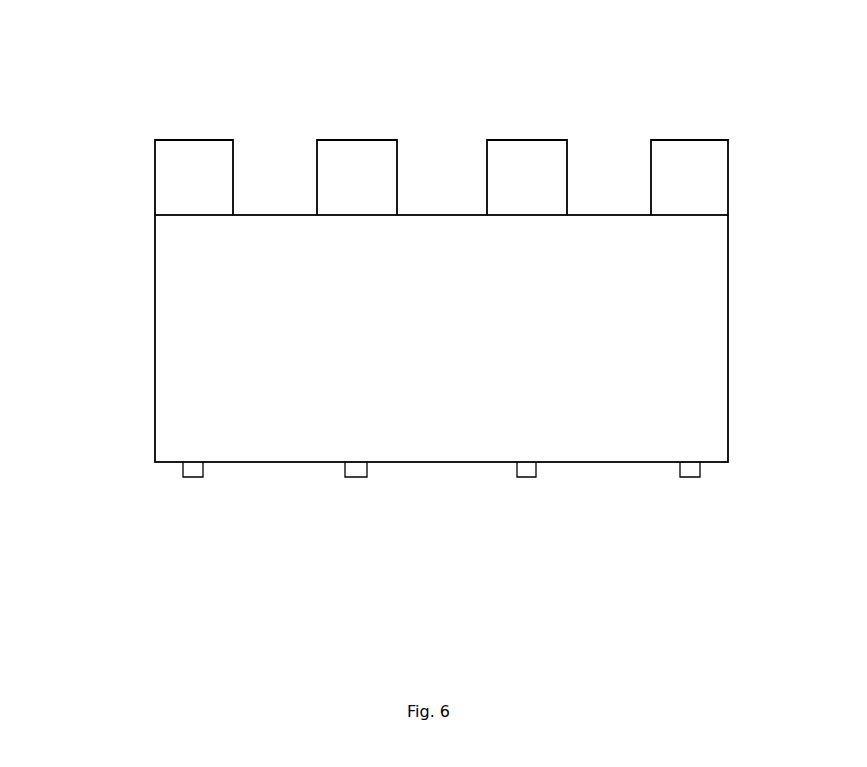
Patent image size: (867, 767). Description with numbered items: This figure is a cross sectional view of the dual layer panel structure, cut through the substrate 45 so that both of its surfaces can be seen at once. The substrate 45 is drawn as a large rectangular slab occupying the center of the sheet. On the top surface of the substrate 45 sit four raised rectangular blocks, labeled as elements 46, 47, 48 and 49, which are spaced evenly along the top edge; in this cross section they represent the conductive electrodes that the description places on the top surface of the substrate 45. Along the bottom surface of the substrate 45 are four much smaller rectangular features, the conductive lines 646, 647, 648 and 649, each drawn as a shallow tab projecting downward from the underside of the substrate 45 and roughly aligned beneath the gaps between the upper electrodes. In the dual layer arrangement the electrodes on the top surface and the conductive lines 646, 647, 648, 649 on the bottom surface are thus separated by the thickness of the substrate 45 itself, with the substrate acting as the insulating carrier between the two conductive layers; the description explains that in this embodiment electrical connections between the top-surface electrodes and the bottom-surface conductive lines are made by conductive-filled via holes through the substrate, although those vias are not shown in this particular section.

The substrate 45 is at (145, 368).
The first upper contact block 46 is at (194, 123).
The second upper contact block 47 is at (360, 115).
The third upper contact block 48 is at (518, 122).
The fourth upper contact block 49 is at (689, 127).
The conductive line 646 is at (185, 474).
The conductive line 647 is at (347, 474).
The conductive line 648 is at (520, 474).
The conductive line 649 is at (683, 474).